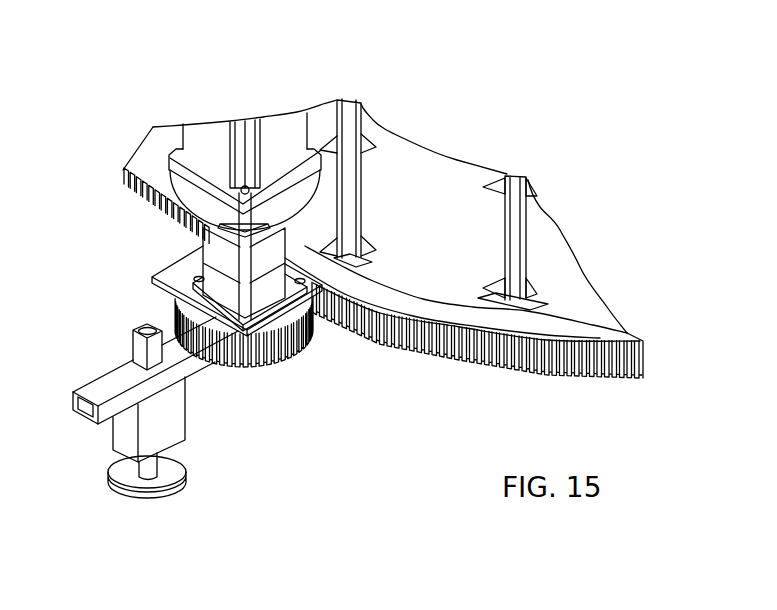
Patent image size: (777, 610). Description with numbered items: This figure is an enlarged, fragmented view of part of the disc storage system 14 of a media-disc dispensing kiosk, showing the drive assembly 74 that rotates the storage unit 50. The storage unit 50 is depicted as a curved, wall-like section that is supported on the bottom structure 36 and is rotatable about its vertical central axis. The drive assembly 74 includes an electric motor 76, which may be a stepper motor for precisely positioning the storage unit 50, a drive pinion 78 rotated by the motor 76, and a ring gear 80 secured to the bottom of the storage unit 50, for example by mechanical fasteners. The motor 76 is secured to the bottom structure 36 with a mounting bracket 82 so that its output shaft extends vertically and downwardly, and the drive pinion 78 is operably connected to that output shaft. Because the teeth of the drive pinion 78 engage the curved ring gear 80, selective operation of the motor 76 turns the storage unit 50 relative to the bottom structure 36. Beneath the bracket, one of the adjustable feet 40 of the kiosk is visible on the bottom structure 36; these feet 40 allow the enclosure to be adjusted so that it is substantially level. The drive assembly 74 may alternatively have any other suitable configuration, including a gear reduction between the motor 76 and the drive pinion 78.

The disc storage system 14 is at (385, 147).
The storage unit 50 is at (420, 167).
The electric motor 76 is at (277, 131).
The drive assembly 74 is at (335, 372).
The mounting bracket 82 is at (177, 263).
The drive pinion 78 is at (262, 369).
The ring gear 80 is at (457, 357).
The bottom structure 36 is at (183, 418).
The adjustable feet 40 is at (157, 512).